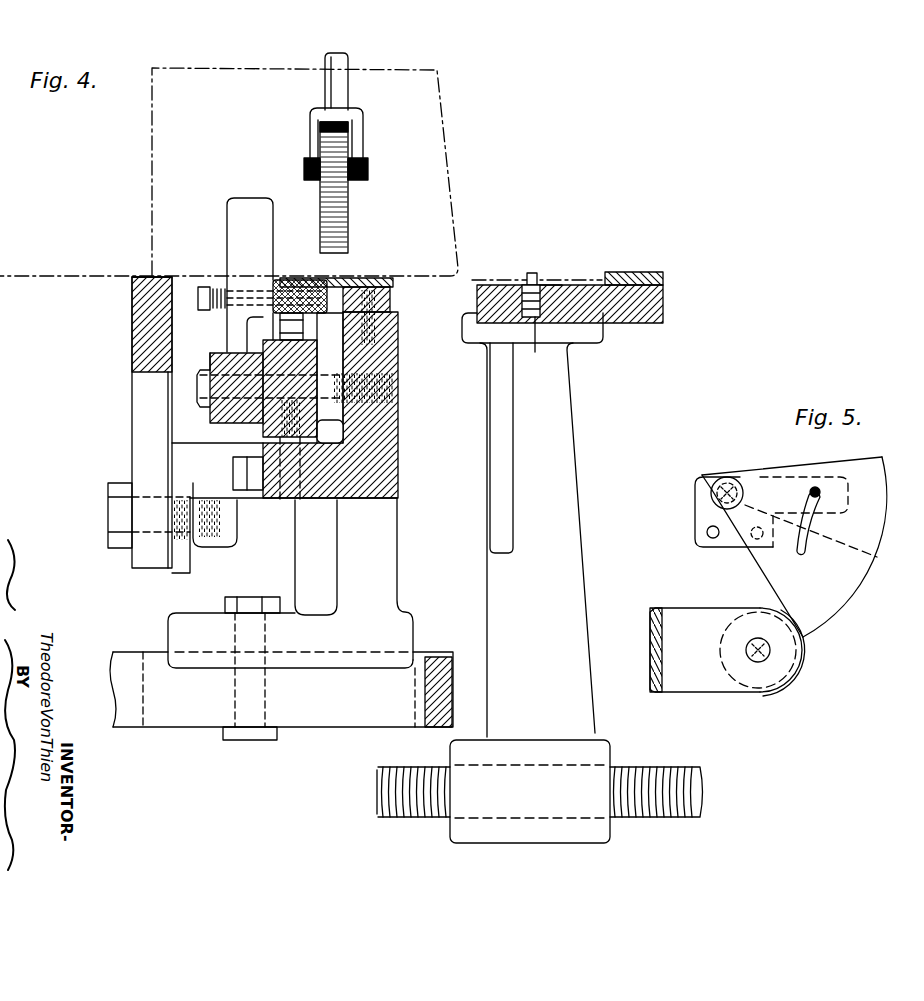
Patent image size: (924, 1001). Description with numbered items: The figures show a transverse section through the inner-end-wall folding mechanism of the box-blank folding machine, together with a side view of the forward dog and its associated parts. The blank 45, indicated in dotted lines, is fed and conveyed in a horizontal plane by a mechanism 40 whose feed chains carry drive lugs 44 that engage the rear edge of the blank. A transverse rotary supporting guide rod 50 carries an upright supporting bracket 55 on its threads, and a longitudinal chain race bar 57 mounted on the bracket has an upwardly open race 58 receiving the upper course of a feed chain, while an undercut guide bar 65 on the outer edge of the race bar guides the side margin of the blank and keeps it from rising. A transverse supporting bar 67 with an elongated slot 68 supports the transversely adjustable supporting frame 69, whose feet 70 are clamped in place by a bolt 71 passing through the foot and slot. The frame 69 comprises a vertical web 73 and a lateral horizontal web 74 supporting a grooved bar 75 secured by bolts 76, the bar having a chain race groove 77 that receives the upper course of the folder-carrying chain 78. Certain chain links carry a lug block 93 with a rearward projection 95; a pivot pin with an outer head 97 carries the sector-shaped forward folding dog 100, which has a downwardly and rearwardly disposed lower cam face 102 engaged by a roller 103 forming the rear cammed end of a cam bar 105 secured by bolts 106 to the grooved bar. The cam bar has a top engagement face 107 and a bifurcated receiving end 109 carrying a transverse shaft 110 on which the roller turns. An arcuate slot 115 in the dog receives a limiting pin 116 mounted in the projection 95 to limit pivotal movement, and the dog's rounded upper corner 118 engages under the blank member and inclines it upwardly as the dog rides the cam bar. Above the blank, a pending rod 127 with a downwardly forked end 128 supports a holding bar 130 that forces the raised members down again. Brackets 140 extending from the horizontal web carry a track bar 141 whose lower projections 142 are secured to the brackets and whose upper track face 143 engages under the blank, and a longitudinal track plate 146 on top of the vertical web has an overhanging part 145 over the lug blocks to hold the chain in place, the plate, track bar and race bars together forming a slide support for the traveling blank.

In FIG. 4, the feeding and conveying mechanism 40 is at (541, 285).
In FIG. 4, the drive lugs 44 is at (531, 272).
In FIG. 4, the blank 45 is at (456, 158).
In FIG. 4, the rotary supporting guide rod 50 is at (680, 773).
In FIG. 4, the upright supporting bracket 55 is at (570, 528).
In FIG. 4, the chain race bar 57 is at (665, 307).
In FIG. 4, the race 58 is at (537, 344).
In FIG. 4, the undercut guide bar 65 is at (610, 272).
In FIG. 4, the transverse supporting bar 67 is at (436, 656).
In FIG. 4, the elongated slot 68 is at (413, 715).
In FIG. 4, the supporting frame 69 is at (397, 569).
In FIG. 4, the feet 70 is at (401, 614).
In FIG. 4, the bolt 71 is at (254, 741).
In FIG. 4, the vertical web 73 is at (399, 349).
In FIG. 4, the horizontal web 74 is at (262, 503).
In FIG. 4, the grooved bar 75 is at (262, 433).
In FIG. 4, the bolt 76 is at (303, 508).
In FIG. 4, the chain race groove 77 is at (327, 326).
In FIG. 4, the folder-carrying chain 78 is at (279, 333).
In FIG. 4, the lug block 93 is at (295, 280).
In FIG. 5, the lug block 93 is at (697, 478).
In FIG. 5, the rearward projection 95 is at (849, 497).
In FIG. 5, the pivot pin head 97 is at (712, 495).
In FIG. 4, the forward folding dog 100 is at (231, 206).
In FIG. 5, the forward folding dog 100 is at (812, 467).
In FIG. 5, the lower cam face 102 is at (771, 589).
In FIG. 5, the roller 103 is at (801, 658).
In FIG. 4, the cam bar 105 is at (212, 409).
In FIG. 5, the cam bar 105 is at (684, 609).
In FIG. 4, the bolt 106 is at (210, 372).
In FIG. 4, the top engagement face 107 is at (214, 368).
In FIG. 5, the top engagement face 107 is at (690, 612).
In FIG. 5, the bifurcated receiving end 109 is at (745, 676).
In FIG. 5, the transverse shaft 110 is at (768, 661).
In FIG. 5, the arcuate slot 115 is at (804, 551).
In FIG. 5, the limiting pin 116 is at (820, 499).
In FIG. 5, the rounded upper corner 118 is at (856, 536).
In FIG. 4, the pending rod 127 is at (350, 63).
In FIG. 4, the forked end 128 is at (365, 120).
In FIG. 4, the holding bar 130 is at (349, 214).
In FIG. 4, the bracket 140 is at (181, 574).
In FIG. 4, the track bar 141 is at (130, 337).
In FIG. 4, the lower projection 142 is at (130, 558).
In FIG. 4, the upper track face 143 is at (139, 275).
In FIG. 4, the overhanging part 145 is at (325, 279).
In FIG. 4, the track plate 146 is at (391, 301).